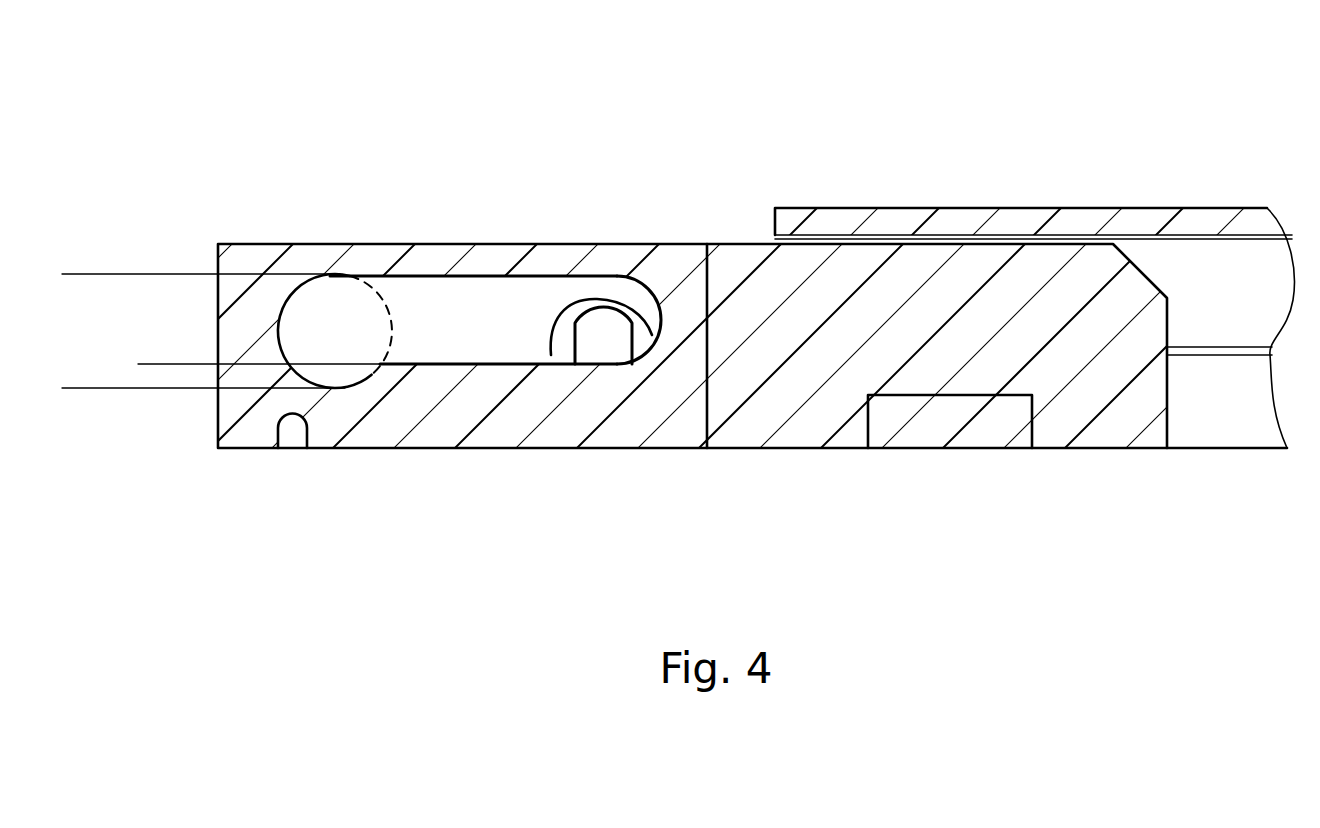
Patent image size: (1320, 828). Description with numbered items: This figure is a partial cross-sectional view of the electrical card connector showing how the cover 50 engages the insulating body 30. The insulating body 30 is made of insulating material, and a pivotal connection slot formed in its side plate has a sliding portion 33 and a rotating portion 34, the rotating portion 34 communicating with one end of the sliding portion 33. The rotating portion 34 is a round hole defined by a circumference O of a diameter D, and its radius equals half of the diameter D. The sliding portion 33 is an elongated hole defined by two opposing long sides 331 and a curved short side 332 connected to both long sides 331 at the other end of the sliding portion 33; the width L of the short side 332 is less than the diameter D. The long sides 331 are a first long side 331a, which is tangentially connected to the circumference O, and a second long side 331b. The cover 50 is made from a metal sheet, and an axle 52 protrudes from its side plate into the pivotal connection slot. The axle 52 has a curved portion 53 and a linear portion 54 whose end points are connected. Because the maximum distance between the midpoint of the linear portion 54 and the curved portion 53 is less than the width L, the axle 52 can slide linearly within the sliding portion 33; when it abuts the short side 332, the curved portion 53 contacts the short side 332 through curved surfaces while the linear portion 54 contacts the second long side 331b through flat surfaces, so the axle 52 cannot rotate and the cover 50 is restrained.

The insulating body 30 is at (929, 462).
The sliding portion 33 is at (452, 366).
The long sides 331 is at (560, 302).
The first long side 331a is at (417, 317).
The second long side 331b is at (506, 363).
The short side 332 is at (660, 323).
The rotating portion 34 is at (347, 390).
The cover 50 is at (948, 193).
The axle 52 is at (632, 217).
The curved portion 53 is at (563, 300).
The linear portion 54 is at (612, 358).
The circumference O is at (372, 278).
The diameter D is at (84, 286).
The width L is at (153, 286).